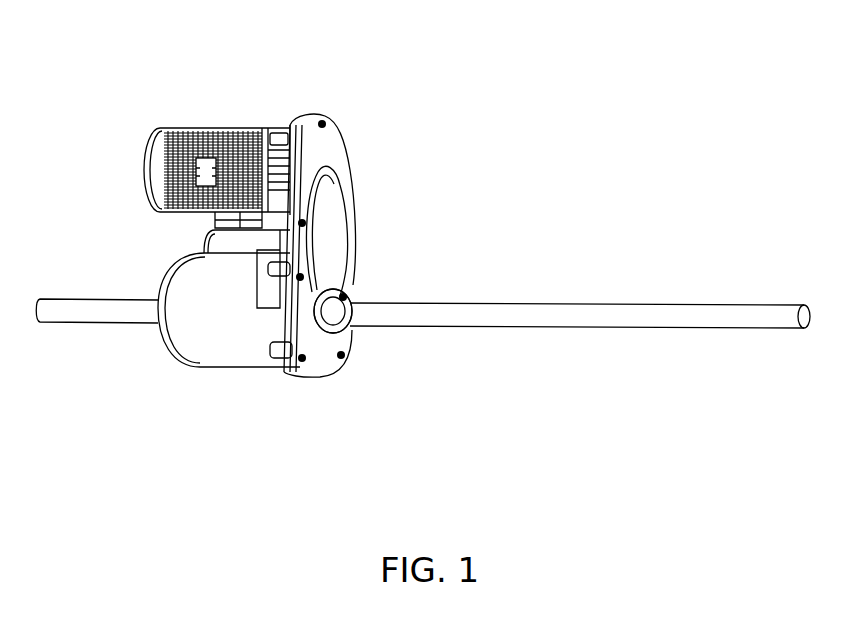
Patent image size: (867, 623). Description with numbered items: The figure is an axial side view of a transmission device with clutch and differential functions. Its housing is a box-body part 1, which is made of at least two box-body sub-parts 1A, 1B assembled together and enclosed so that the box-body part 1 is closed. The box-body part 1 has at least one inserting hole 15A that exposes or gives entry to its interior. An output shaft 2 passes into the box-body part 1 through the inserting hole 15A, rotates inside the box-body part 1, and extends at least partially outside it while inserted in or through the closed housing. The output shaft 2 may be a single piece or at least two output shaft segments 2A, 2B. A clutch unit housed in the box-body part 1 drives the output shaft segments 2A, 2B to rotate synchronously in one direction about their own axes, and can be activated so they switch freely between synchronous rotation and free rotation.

The box-body part 1 is at (140, 52).
The box-body sub-part 1A is at (188, 128).
The box-body sub-part 1B is at (335, 130).
The inserting hole 15A is at (350, 300).
The output shaft 2 is at (224, 442).
The output shaft segment 2A is at (110, 312).
The output shaft segment 2B is at (423, 318).